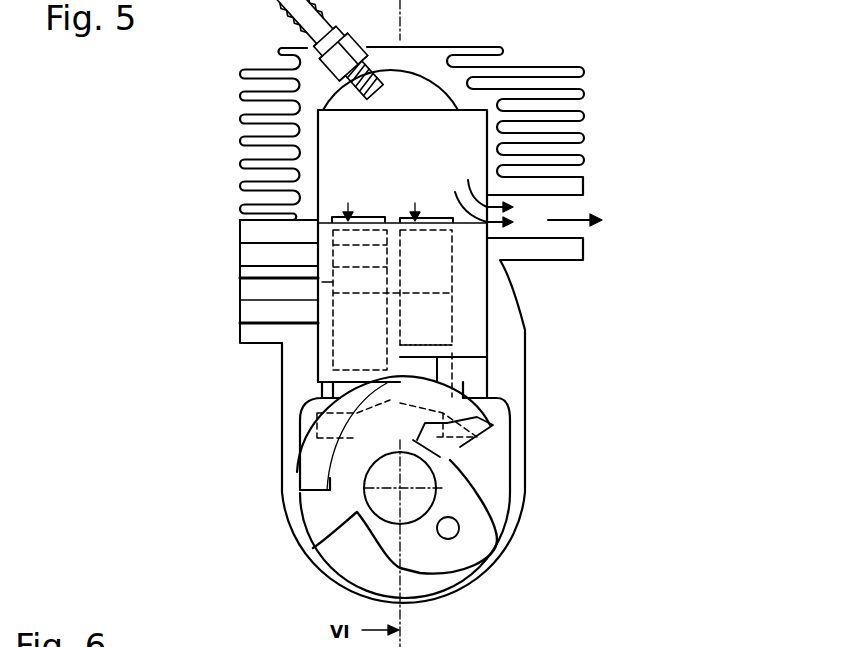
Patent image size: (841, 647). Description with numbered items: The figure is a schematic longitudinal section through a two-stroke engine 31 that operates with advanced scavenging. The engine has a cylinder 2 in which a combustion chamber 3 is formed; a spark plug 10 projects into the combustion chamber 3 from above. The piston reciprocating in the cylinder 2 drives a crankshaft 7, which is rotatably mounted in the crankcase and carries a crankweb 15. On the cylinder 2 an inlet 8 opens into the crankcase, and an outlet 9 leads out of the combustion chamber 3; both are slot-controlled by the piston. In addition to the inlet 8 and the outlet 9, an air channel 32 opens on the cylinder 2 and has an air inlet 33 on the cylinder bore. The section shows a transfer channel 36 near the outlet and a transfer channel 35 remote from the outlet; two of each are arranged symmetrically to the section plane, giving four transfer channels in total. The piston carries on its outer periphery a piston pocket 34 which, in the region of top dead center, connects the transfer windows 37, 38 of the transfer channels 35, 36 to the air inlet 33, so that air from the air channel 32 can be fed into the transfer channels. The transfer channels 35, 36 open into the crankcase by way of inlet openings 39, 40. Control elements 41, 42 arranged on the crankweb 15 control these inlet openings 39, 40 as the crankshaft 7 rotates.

The cylinder 2 is at (307, 135).
The combustion chamber 3 is at (453, 138).
The crankshaft 7 is at (383, 503).
The inlet 8 is at (312, 300).
The outlet 9 is at (487, 233).
The spark plug 10 is at (307, 50).
The crankweb 15 is at (313, 515).
The two-stroke engine 31 is at (660, 62).
The air channel 32 is at (263, 258).
The air inlet 33 is at (337, 243).
The piston pocket 34 is at (440, 320).
The transfer channel remote from the outlet 35 is at (340, 280).
The transfer channel near the outlet 36 is at (443, 267).
The transfer window 37 is at (369, 217).
The transfer window 38 is at (433, 218).
The inlet opening 39 is at (320, 417).
The inlet opening 40 is at (485, 425).
The control element 41 is at (313, 472).
The control element 42 is at (457, 450).